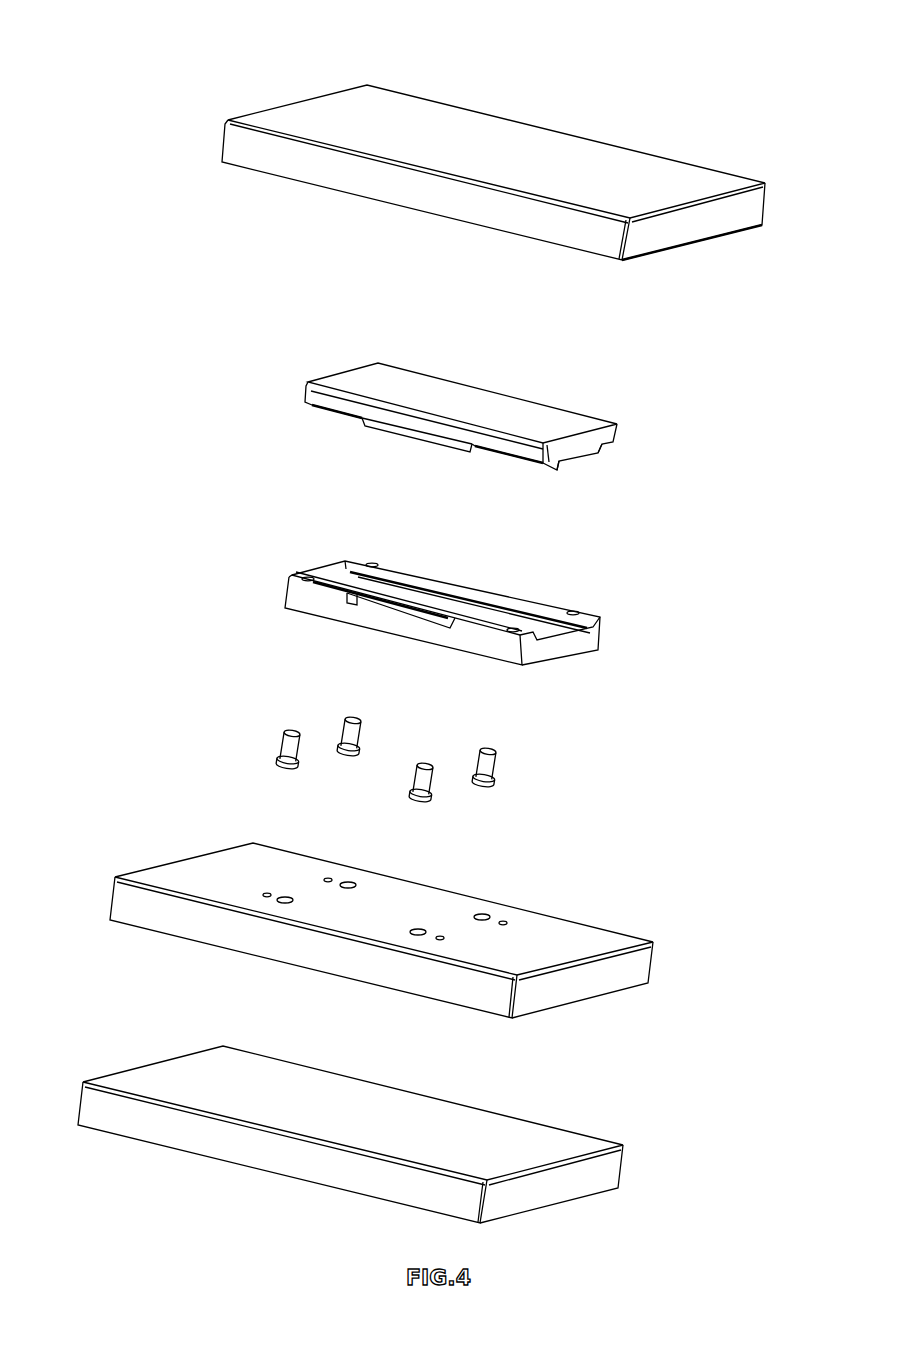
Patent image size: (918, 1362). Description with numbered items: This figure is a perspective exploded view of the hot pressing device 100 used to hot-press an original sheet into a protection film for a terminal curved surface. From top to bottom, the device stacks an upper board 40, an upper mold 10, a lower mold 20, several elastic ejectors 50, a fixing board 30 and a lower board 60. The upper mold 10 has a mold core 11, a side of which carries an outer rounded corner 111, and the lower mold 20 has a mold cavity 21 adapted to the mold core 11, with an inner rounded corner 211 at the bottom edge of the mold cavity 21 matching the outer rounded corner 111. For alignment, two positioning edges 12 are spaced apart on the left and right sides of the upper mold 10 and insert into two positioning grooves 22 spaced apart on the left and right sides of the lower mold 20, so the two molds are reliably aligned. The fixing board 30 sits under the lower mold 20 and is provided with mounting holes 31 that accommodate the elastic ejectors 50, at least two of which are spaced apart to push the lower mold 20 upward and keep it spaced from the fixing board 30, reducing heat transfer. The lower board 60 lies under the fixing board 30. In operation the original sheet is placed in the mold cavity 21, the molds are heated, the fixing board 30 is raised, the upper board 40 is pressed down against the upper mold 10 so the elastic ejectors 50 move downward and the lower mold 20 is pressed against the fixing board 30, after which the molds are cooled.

The hot pressing device 100 is at (497, 33).
The upper board 40 is at (255, 148).
The upper mold 10 is at (440, 443).
The positioning edge 12 is at (417, 435).
The mold core 11 is at (570, 455).
The outer rounded corner 111 is at (598, 450).
The lower mold 20 is at (446, 607).
The mold cavity 21 is at (545, 609).
The inner rounded corner 211 is at (516, 636).
The positioning groove 22 is at (390, 608).
The elastic ejector 50 is at (353, 730).
The fixing board 30 is at (443, 920).
The mounting hole 31 is at (427, 932).
The lower board 60 is at (530, 1147).